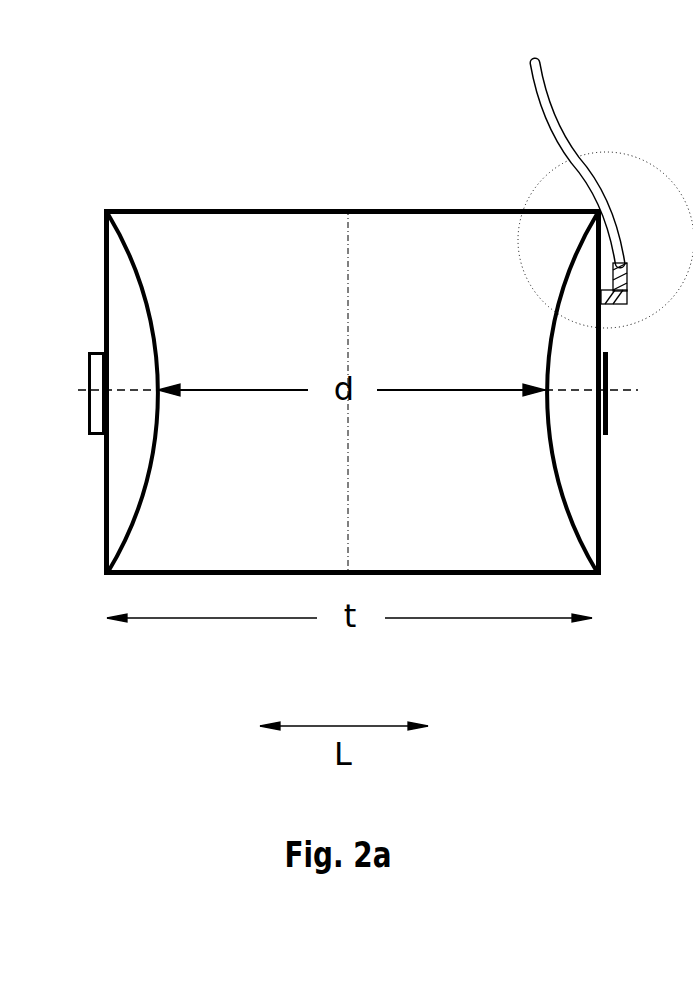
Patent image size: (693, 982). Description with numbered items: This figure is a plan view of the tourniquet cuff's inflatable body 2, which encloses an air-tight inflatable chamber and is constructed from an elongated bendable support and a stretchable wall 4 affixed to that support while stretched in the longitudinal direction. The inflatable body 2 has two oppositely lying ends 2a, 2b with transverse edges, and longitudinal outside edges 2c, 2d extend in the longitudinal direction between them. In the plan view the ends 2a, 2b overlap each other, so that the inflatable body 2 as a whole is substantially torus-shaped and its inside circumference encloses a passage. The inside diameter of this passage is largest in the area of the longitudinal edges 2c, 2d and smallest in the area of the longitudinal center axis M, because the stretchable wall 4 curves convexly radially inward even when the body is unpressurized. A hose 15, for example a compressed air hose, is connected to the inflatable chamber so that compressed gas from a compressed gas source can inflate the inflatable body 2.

The inflatable body 2 is at (362, 348).
The end of the inflatable body 2a is at (108, 485).
The end of the inflatable body 2b is at (595, 497).
The longitudinal edge 2c is at (443, 212).
The longitudinal edge 2d is at (447, 572).
The stretchable wall 4 is at (269, 513).
The hose 15 is at (560, 131).
The longitudinal center axis M is at (341, 394).